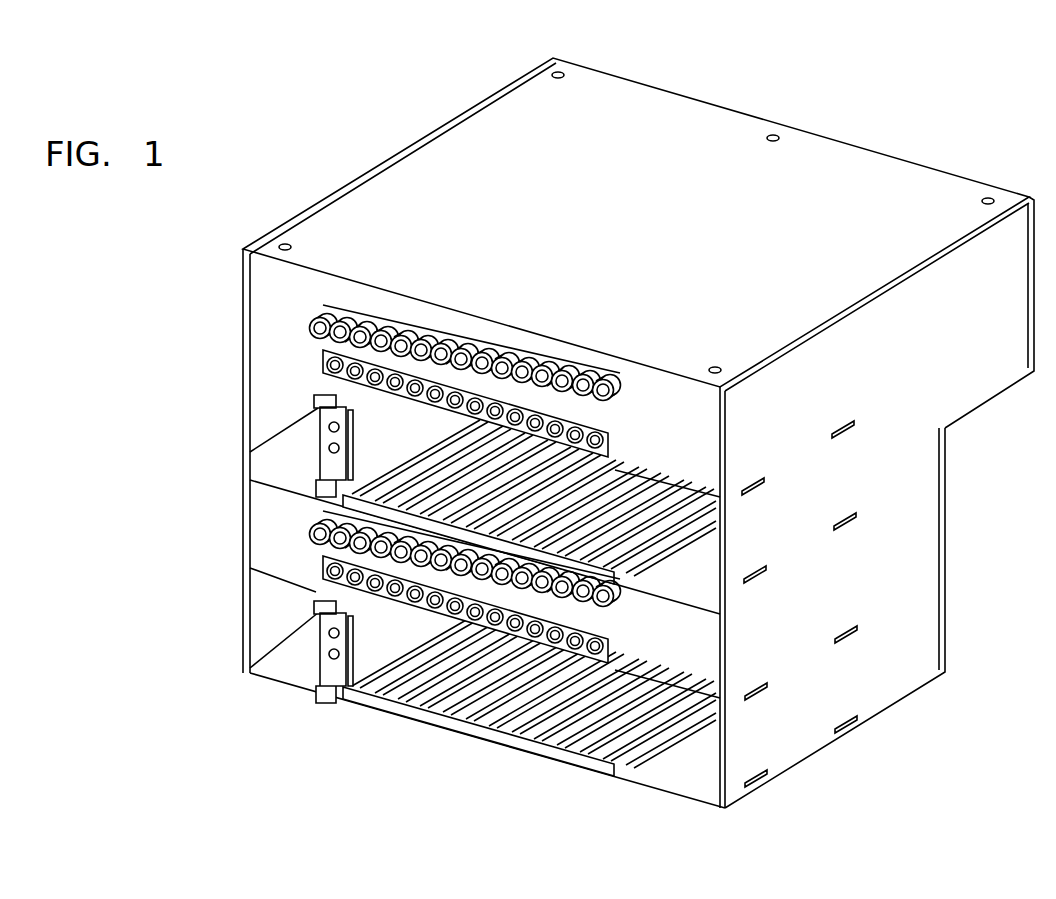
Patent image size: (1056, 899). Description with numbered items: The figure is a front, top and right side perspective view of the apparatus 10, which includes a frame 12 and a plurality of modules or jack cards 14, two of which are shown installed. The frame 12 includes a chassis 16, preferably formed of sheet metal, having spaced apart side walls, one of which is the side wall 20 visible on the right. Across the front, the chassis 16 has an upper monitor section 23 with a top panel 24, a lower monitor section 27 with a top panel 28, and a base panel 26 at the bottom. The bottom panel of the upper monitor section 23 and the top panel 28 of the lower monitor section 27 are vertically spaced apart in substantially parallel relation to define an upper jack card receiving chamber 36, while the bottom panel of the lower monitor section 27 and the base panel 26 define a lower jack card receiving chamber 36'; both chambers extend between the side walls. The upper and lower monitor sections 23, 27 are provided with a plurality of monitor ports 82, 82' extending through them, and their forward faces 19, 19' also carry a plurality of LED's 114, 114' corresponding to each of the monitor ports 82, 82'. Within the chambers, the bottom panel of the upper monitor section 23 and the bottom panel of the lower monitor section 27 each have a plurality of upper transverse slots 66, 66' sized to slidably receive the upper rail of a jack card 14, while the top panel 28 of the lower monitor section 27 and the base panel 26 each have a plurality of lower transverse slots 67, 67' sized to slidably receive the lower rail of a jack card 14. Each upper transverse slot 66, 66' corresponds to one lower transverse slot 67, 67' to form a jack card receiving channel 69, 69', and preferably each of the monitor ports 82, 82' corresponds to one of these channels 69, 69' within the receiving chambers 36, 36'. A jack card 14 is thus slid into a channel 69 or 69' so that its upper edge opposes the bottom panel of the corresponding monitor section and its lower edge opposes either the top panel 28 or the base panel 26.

The apparatus 10 is at (547, 407).
The frame 12 is at (974, 181).
The jack card 14 is at (453, 406).
The chassis 16 is at (675, 92).
The forward face of upper monitor section 19 is at (241, 388).
The forward face of lower monitor section 19' is at (258, 606).
The side wall 20 is at (903, 565).
The upper monitor section 23 is at (240, 285).
The top panel 24 is at (535, 105).
The base panel 26 is at (285, 658).
The lower monitor section 27 is at (240, 512).
The top panel 28 is at (290, 449).
The upper jack card receiving chamber 36 is at (574, 380).
The jack card receiving chamber 36' is at (529, 744).
The upper transverse slots 66 is at (465, 343).
The upper transverse slots 66' is at (428, 724).
The lower transverse slots 67 is at (670, 481).
The lower transverse slots 67' is at (614, 768).
The jack card receiving channel 69 is at (546, 367).
The jack card receiving channel 69' is at (488, 743).
The monitor ports 82 is at (527, 373).
The monitor ports 82' is at (578, 613).
The LED's 114 is at (465, 255).
The LED's 114' is at (575, 566).